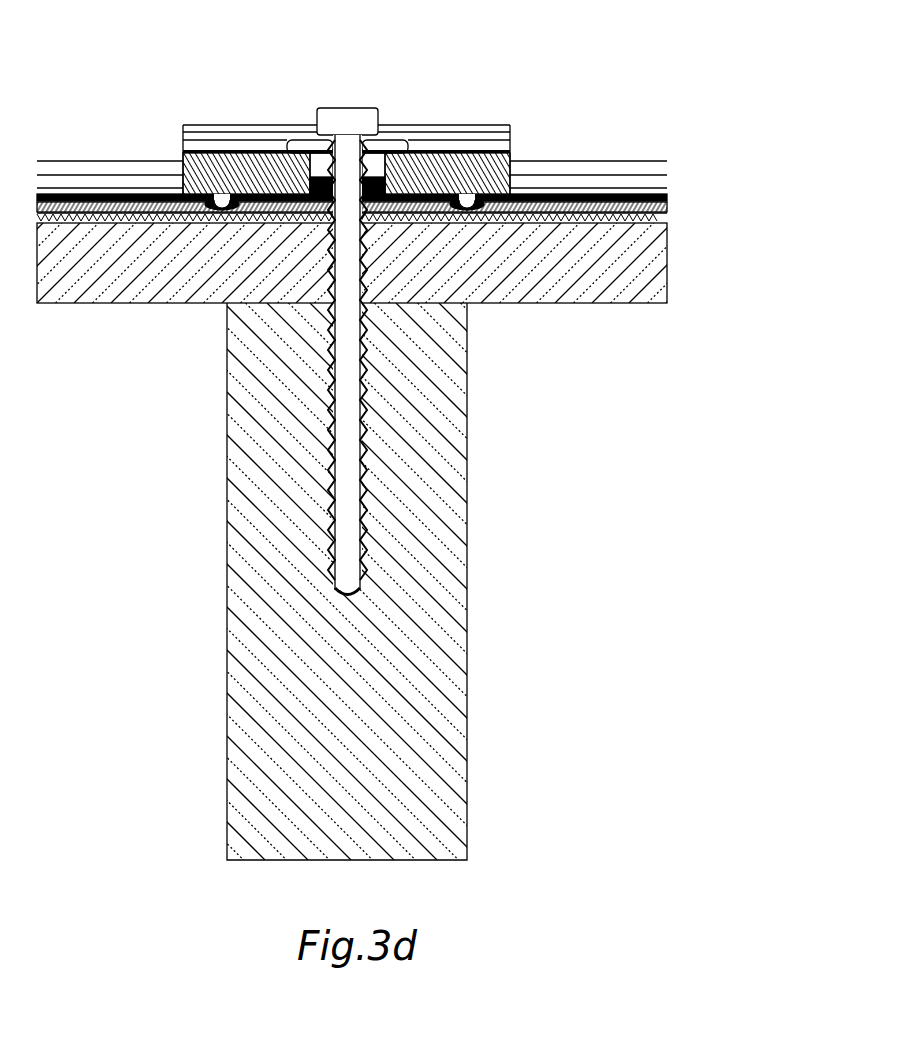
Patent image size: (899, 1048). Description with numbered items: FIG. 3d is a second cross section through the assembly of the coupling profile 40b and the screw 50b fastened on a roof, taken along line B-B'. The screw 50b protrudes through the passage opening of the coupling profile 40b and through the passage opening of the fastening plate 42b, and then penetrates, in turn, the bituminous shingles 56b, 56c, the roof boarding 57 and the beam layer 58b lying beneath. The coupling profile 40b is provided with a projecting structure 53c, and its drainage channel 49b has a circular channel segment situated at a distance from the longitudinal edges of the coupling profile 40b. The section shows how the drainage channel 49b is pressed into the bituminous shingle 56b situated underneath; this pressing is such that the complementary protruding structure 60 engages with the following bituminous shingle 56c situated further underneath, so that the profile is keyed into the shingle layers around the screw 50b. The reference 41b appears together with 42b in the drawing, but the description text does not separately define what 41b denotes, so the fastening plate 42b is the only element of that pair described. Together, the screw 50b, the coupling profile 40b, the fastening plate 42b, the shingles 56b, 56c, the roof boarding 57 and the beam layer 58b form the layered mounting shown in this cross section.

The coupling profile 40b is at (250, 168).
The first panel sheet 41b is at (618, 195).
The fastening plate 42b is at (352, 194).
The drainage channel 49b is at (222, 200).
The screw 50b is at (353, 104).
The projecting structure 53c is at (455, 125).
The bituminous shingle 56b is at (662, 205).
The bituminous shingle 56c is at (662, 218).
The roof boarding 57 is at (640, 263).
The beam layer 58b is at (440, 437).
The complementary protruding structure 60 is at (223, 212).